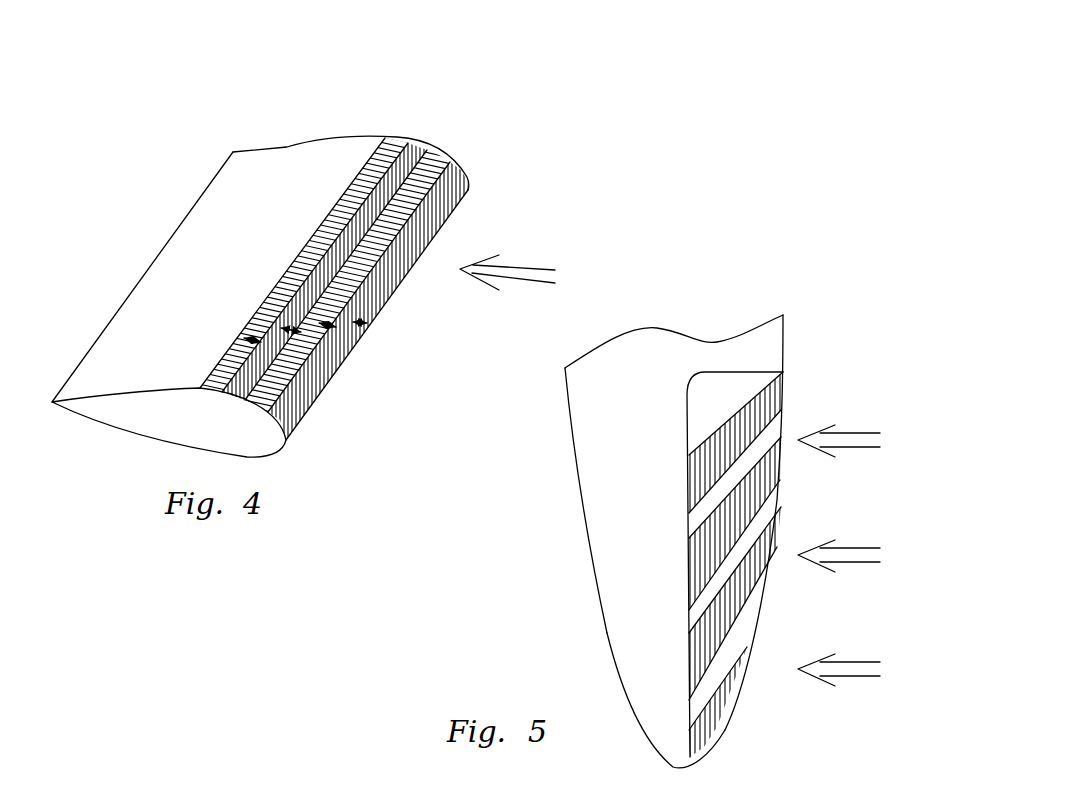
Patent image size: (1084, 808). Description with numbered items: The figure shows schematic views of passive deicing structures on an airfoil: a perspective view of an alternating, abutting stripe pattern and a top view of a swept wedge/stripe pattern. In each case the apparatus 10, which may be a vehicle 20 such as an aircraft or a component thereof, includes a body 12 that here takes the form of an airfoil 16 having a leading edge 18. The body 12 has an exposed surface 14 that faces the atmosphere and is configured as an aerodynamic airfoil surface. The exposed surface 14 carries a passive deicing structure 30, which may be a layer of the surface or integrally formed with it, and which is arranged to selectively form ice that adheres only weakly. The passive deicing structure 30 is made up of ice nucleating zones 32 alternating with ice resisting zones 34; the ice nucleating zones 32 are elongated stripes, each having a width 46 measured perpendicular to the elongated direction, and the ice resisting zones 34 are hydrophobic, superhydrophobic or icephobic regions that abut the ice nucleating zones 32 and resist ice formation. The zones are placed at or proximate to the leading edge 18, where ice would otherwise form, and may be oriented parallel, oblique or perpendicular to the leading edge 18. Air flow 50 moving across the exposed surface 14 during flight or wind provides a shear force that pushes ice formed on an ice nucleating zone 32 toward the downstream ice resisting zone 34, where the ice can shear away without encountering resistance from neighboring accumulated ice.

In FIG. 4, the apparatus 10 is at (188, 40).
In FIG. 5, the apparatus 10 is at (808, 247).
In FIG. 4, the body 12 is at (285, 138).
In FIG. 5, the body 12 is at (606, 630).
In FIG. 4, the exposed surface 14 is at (257, 144).
In FIG. 5, the exposed surface 14 is at (600, 590).
In FIG. 4, the airfoil 16 is at (311, 134).
In FIG. 5, the airfoil 16 is at (585, 537).
In FIG. 4, the leading edge 18 is at (407, 278).
In FIG. 5, the leading edge 18 is at (744, 667).
In FIG. 4, the vehicle 20 is at (202, 92).
In FIG. 5, the vehicle 20 is at (808, 292).
In FIG. 4, the passive deicing structure 30 is at (397, 63).
In FIG. 5, the passive deicing structure 30 is at (686, 483).
In FIG. 4, the ice nucleating zone 32 is at (430, 146).
In FIG. 5, the ice nucleating zone 32 is at (715, 432).
In FIG. 4, the ice resisting zone 34 is at (397, 139).
In FIG. 5, the ice resisting zone 34 is at (686, 402).
In FIG. 4, the width 46 is at (330, 323).
In FIG. 4, the air flow 50 is at (540, 265).
In FIG. 5, the air flow 50 is at (848, 433).